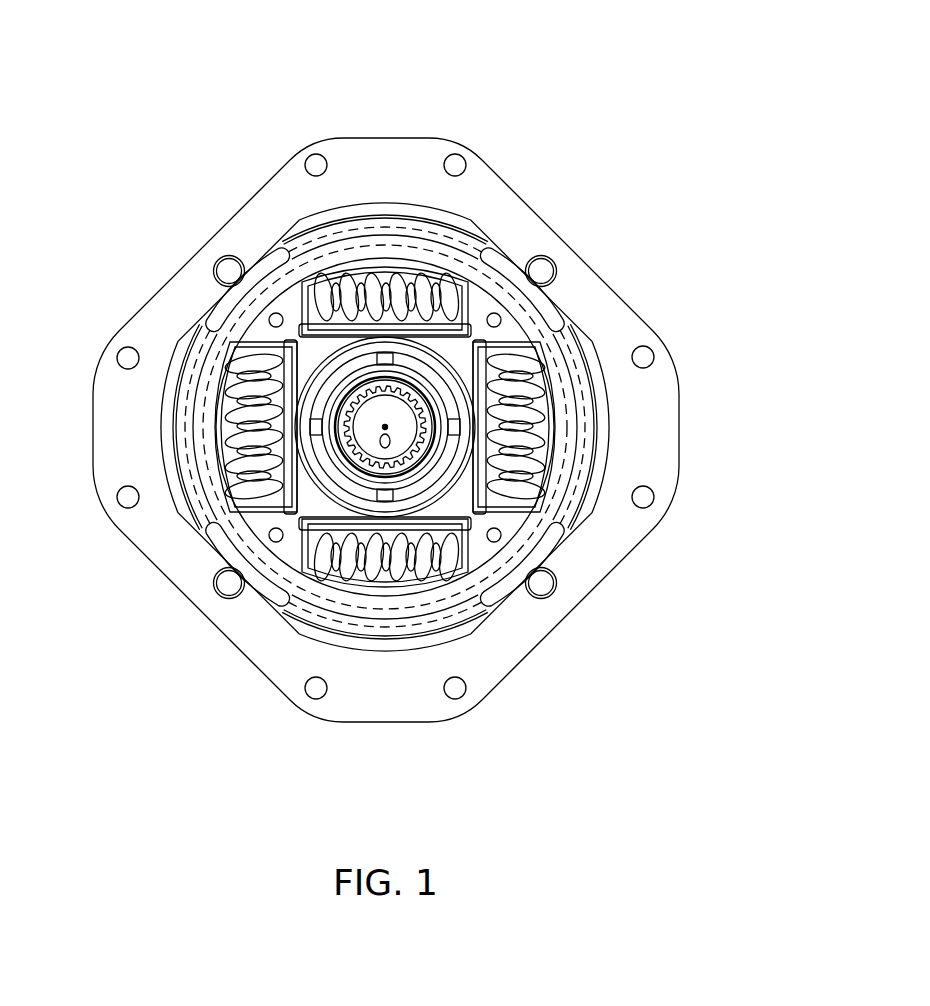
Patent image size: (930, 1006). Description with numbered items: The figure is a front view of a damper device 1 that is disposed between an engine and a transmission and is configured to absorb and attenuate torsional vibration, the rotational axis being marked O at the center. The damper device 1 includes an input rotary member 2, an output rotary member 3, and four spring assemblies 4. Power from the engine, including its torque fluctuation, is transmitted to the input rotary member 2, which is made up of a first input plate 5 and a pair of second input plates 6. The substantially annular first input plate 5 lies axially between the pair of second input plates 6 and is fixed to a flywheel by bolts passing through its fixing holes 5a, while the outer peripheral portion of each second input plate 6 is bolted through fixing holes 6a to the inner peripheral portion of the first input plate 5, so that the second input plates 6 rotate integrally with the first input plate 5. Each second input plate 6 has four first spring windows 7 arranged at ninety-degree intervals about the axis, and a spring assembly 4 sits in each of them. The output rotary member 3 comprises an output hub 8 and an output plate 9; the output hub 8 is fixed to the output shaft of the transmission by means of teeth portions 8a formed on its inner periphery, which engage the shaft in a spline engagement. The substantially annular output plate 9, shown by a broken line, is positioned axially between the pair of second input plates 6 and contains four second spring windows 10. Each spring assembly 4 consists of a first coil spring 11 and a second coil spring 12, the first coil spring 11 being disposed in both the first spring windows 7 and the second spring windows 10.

The damper device 1 is at (556, 100).
The input rotary member 2 is at (672, 205).
The output rotary member 3 is at (655, 558).
The spring assemblies 4 is at (96, 163).
The first input plate 5 is at (583, 262).
The fixing holes 5a is at (455, 154).
The second input plates 6 is at (587, 315).
The fixing holes 6a is at (547, 256).
The first spring windows 7 is at (264, 522).
The output hub 8 is at (402, 440).
The teeth portions 8a is at (433, 463).
The output plate 9 is at (563, 492).
The second spring windows 10 is at (577, 468).
The first coil spring 11 is at (232, 382).
The second coil spring 12 is at (230, 432).